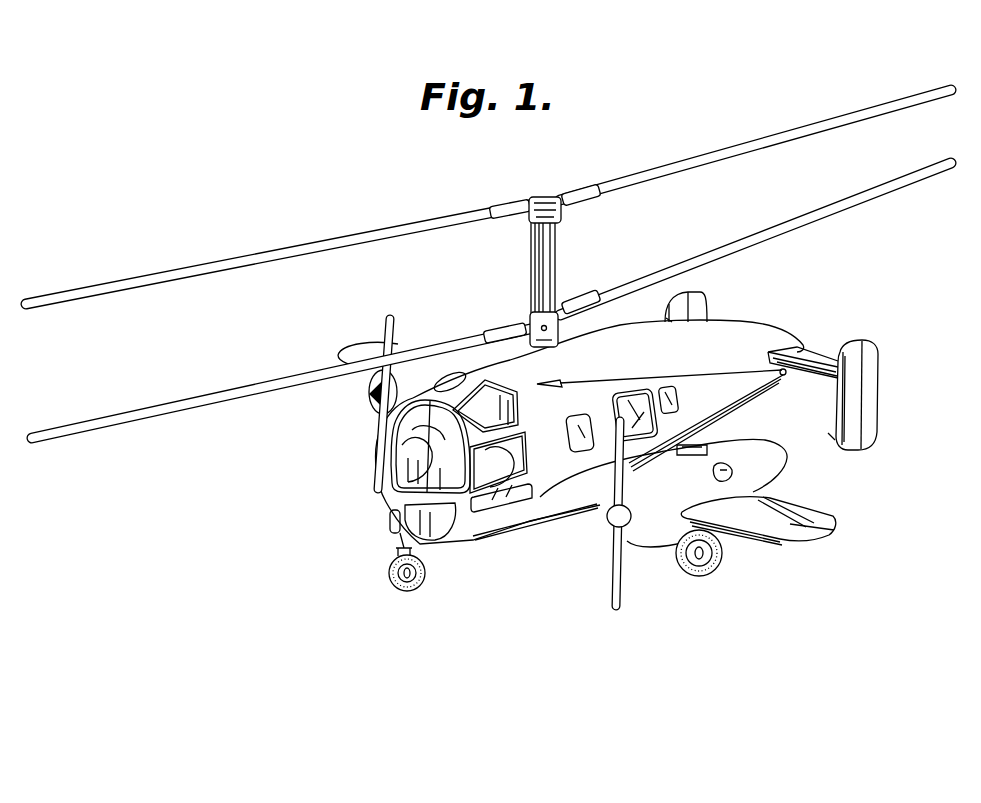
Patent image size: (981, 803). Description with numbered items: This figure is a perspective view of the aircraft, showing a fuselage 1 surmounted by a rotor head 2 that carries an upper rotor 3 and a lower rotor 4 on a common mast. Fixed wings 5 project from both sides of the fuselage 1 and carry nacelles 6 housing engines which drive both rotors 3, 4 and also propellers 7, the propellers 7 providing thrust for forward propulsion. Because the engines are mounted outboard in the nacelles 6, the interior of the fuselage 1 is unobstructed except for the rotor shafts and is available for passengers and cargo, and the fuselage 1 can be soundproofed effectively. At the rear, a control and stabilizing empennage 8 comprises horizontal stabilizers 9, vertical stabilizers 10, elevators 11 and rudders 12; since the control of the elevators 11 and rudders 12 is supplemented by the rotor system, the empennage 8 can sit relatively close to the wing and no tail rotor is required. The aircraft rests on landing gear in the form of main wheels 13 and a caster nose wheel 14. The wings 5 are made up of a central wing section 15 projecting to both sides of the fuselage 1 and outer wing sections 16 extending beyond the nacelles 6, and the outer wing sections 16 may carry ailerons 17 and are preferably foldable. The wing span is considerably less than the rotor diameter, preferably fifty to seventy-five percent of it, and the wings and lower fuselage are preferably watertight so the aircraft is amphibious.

The fuselage 1 is at (549, 527).
The rotor head 2 is at (560, 266).
The upper rotor 3 is at (641, 172).
The lower rotor 4 is at (634, 282).
The fixed wings 5 is at (750, 542).
The nacelles 6 is at (660, 482).
The propellers 7 is at (394, 333).
The empennage 8 is at (888, 388).
The horizontal stabilizers 9 is at (818, 375).
The vertical stabilizers 10 is at (668, 312).
The elevators 11 is at (808, 351).
The rudders 12 is at (708, 301).
The main wheels 13 is at (706, 578).
The caster nose wheel 14 is at (426, 577).
The central wing section 15 is at (590, 510).
The outer wing sections 16 is at (793, 537).
The ailerons 17 is at (803, 515).